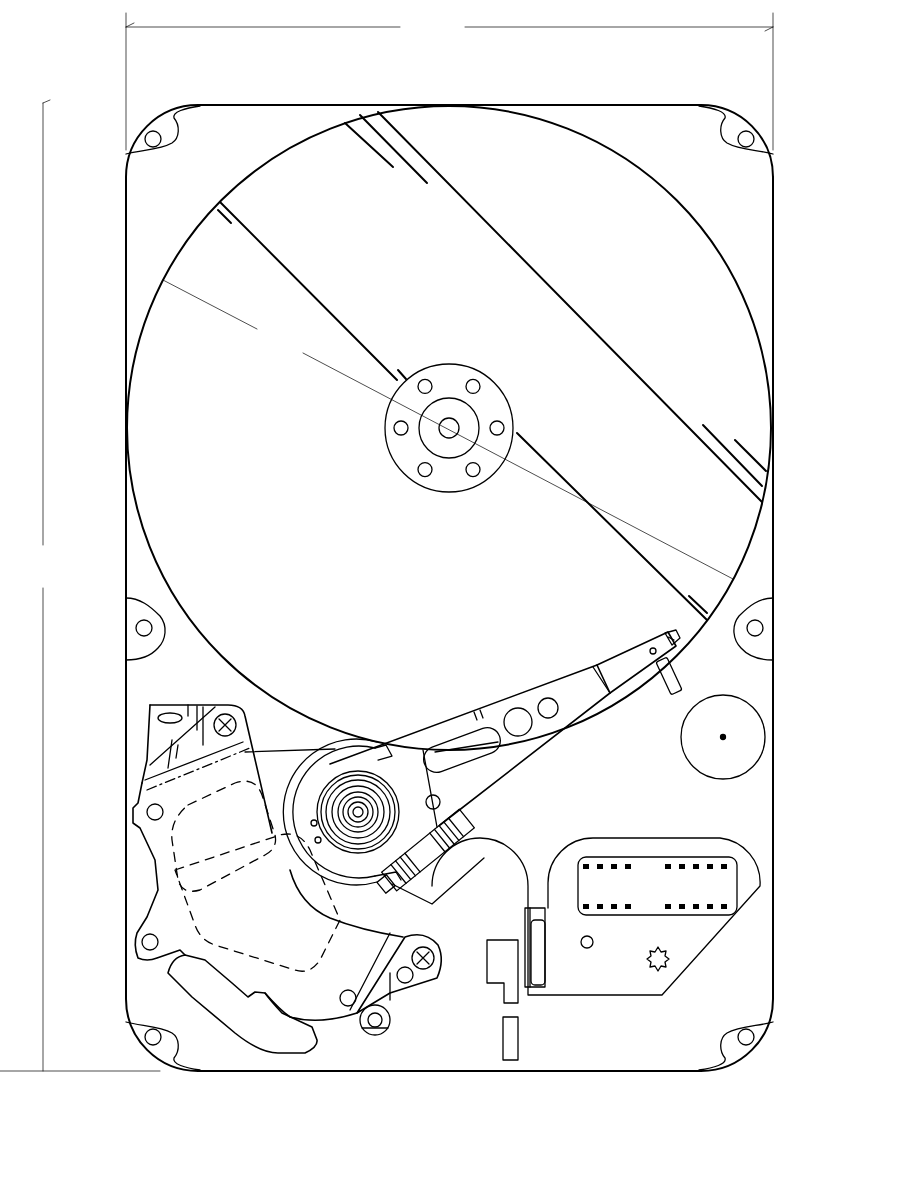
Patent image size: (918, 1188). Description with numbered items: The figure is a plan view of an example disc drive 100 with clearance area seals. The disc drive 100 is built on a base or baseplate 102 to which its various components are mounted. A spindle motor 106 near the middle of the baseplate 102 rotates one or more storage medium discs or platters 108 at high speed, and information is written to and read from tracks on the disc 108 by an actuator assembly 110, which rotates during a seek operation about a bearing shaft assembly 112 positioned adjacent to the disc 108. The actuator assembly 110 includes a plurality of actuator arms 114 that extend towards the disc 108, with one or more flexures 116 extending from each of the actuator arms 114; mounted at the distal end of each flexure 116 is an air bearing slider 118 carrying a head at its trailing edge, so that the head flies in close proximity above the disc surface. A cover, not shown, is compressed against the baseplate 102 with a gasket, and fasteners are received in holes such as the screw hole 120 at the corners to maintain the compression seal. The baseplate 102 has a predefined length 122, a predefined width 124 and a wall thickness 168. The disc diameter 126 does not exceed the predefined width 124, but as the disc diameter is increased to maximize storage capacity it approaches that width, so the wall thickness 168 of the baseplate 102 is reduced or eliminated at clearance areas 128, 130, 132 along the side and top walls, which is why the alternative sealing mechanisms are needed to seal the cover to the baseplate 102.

The disc drive 100 is at (108, 78).
The baseplate 102 is at (449, 588).
The spindle motor 106 is at (449, 429).
The disc 108 is at (449, 428).
The actuator assembly 110 is at (463, 744).
The bearing shaft assembly 112 is at (358, 812).
The actuator arm 114 is at (512, 698).
The flexure 116 is at (610, 660).
The air bearing slider 118 is at (670, 636).
The screw hole 120 is at (754, 142).
The predefined length 122 is at (80, 585).
The predefined width 124 is at (449, 81).
The disc diameter 126 is at (448, 429).
The clearance area 128 is at (115, 418).
The clearance area 130 is at (463, 104).
The clearance area 132 is at (778, 425).
The wall thickness 168 is at (752, 230).